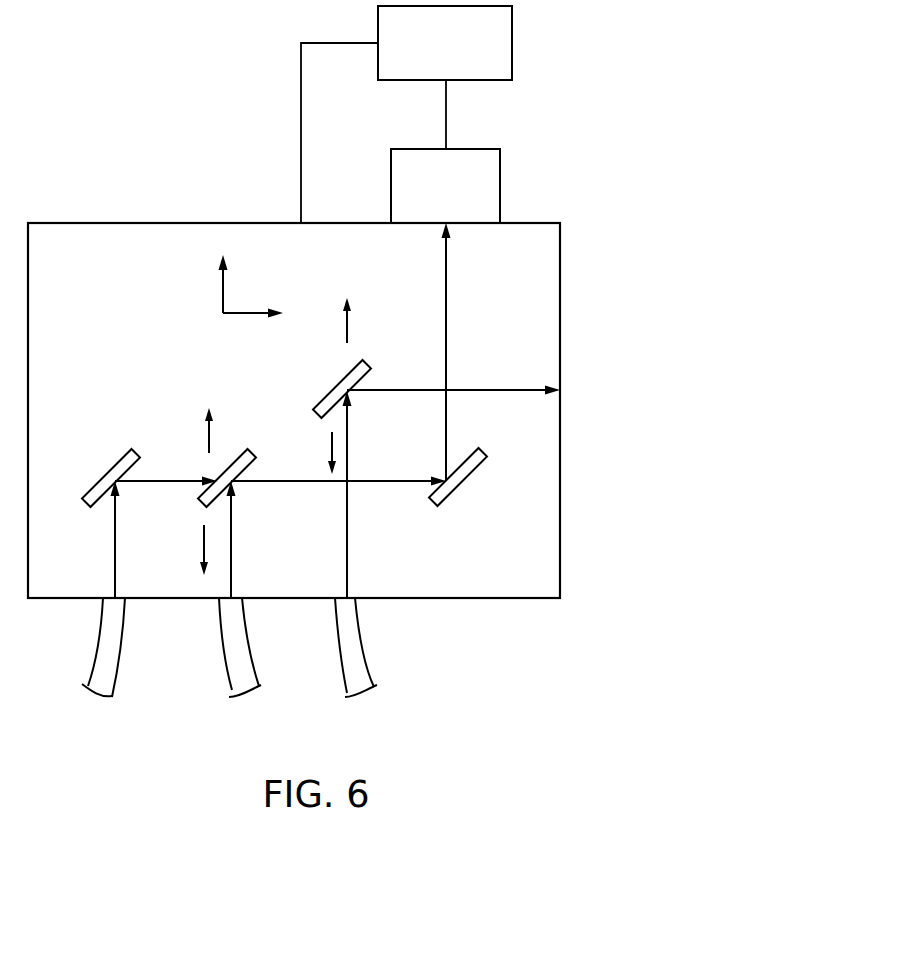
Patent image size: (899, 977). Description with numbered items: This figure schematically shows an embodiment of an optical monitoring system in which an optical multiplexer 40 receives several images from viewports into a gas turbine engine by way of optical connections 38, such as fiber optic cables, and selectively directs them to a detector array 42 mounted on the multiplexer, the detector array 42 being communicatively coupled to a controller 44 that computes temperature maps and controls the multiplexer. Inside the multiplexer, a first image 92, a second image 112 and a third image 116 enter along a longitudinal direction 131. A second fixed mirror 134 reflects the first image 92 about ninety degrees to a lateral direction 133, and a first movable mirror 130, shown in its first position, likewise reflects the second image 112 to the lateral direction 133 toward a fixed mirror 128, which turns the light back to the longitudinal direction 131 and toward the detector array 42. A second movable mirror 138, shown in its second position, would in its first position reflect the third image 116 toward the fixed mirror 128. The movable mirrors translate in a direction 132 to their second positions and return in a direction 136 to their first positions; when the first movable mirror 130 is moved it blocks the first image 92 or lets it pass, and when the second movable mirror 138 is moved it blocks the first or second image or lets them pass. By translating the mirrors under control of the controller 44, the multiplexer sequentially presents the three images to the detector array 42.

The optical connections 38 is at (122, 644).
The optical multiplexer 40 is at (192, 222).
The detector array 42 is at (501, 193).
The controller 44 is at (513, 43).
The first image 92 is at (113, 550).
The second image 112 is at (232, 539).
The third image 116 is at (348, 543).
The fixed mirror 128 is at (470, 478).
The first movable mirror 130 is at (241, 451).
The longitudinal direction 131 is at (222, 297).
The direction 132 is at (204, 437).
The lateral direction 133 is at (253, 312).
The second fixed mirror 134 is at (108, 472).
The direction 136 is at (202, 549).
The second movable mirror 138 is at (325, 392).